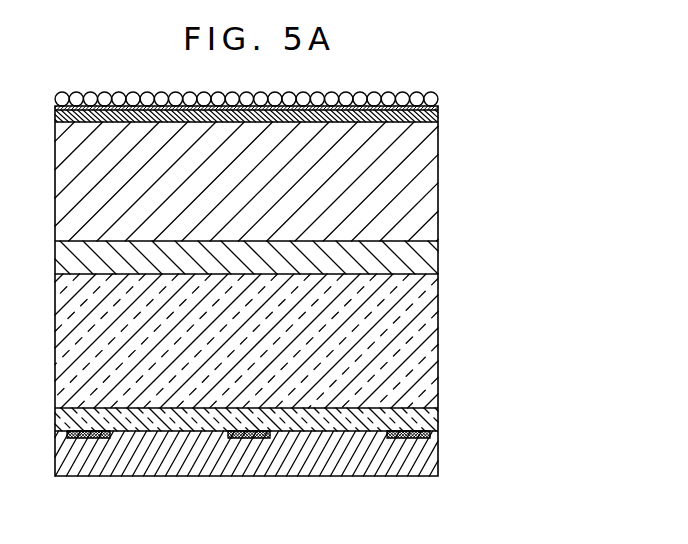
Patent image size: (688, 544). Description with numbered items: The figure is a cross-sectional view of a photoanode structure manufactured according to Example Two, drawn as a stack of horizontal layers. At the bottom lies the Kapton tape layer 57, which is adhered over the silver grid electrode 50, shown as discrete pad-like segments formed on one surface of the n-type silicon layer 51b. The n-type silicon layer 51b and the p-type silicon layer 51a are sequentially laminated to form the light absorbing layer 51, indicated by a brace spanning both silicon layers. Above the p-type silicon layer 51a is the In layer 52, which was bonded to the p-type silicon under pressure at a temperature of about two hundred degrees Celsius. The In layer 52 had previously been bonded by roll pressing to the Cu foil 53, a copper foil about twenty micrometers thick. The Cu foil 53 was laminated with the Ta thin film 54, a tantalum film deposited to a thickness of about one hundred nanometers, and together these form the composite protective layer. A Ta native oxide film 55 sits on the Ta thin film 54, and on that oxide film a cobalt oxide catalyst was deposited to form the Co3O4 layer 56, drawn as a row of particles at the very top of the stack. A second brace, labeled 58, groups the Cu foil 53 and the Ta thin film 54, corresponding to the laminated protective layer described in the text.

The silver grid electrode 50 is at (432, 434).
The light absorbing layer 51 is at (517, 325).
The p-type silicon layer 51a is at (428, 325).
The n-type silicon layer 51b is at (426, 420).
The In layer 52 is at (427, 262).
The Cu foil 53 is at (425, 186).
The Ta thin film 54 is at (425, 123).
The Ta native oxide film 55 is at (440, 111).
The Co3O4 layer 56 is at (440, 100).
The Kapton tape layer 57 is at (427, 458).
The upper stack 58 is at (508, 130).